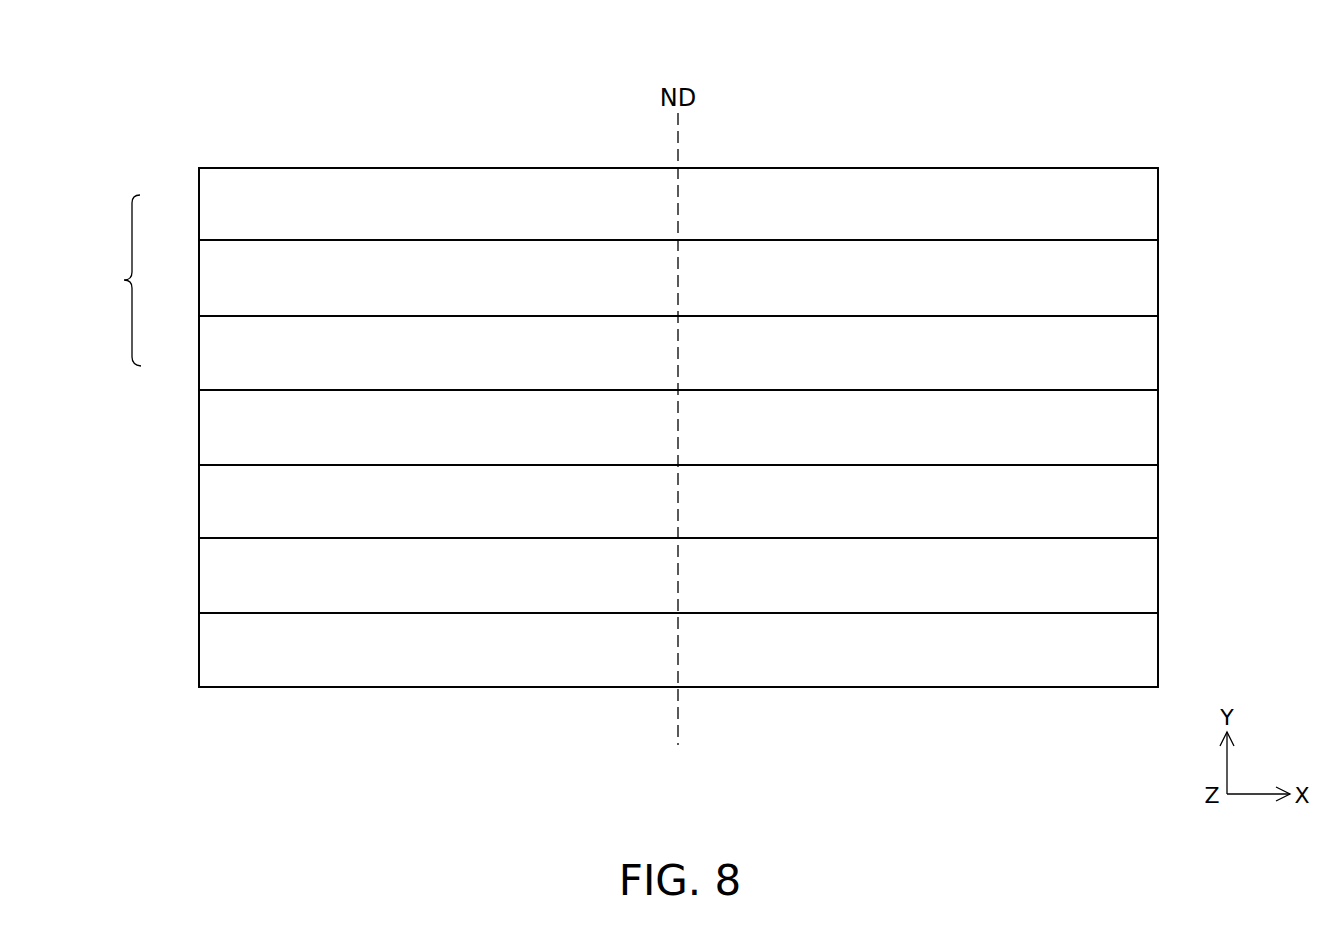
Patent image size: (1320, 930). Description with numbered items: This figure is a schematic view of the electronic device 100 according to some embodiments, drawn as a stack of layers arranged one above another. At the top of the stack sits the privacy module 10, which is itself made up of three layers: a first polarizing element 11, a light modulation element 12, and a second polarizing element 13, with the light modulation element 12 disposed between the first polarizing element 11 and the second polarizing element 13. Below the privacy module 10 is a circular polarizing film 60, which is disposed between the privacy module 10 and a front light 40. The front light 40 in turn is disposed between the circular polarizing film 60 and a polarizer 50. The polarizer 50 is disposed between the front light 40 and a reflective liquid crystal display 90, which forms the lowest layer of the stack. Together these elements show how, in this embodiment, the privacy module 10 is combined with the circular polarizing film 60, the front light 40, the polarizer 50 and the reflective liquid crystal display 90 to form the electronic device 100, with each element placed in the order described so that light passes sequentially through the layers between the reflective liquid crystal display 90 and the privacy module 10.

The electronic device 100 is at (153, 77).
The privacy module 10 is at (114, 280).
The first polarizing element 11 is at (220, 203).
The light modulation element 12 is at (220, 278).
The second polarizing element 13 is at (220, 352).
The circular polarizing film 60 is at (220, 427).
The front light 40 is at (220, 502).
The polarizer 50 is at (220, 576).
The reflective liquid crystal display 90 is at (220, 651).